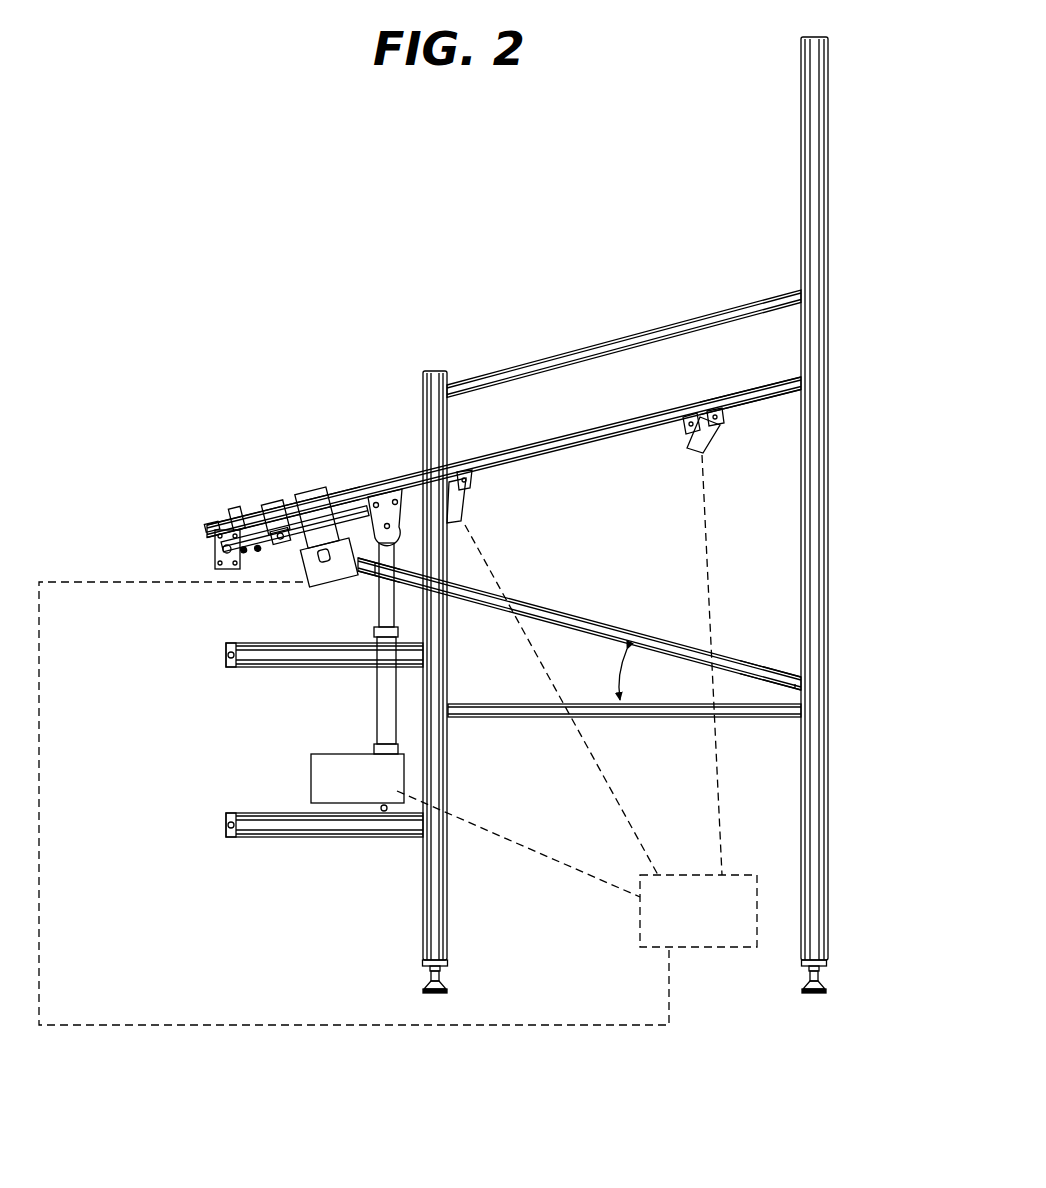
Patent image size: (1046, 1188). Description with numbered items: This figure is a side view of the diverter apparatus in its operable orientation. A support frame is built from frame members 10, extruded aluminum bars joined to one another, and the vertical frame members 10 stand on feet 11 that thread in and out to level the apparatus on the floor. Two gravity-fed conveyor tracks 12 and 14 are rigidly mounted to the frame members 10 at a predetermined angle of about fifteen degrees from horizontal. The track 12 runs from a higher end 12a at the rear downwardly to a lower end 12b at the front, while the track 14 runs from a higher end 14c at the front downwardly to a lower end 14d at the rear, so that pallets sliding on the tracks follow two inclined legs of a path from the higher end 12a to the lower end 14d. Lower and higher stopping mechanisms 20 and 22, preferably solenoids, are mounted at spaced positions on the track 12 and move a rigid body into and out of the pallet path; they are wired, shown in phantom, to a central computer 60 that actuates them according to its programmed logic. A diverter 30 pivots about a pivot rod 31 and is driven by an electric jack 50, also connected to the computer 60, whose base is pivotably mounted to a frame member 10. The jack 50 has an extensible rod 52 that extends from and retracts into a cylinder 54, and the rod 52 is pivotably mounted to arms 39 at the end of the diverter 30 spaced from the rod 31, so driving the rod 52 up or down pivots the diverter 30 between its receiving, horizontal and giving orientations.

The frame members 10 is at (262, 838).
The feet 11 is at (443, 987).
The conveyor track 12 is at (598, 437).
The higher end of track 12 12a is at (740, 390).
The lower end of track 12 12b is at (355, 490).
The conveyor track 14 is at (641, 643).
The higher end of track 14 14c is at (368, 574).
The lower end of track 14 14d is at (753, 667).
The lower stopping mechanism 20 is at (462, 505).
The higher stopping mechanism 22 is at (706, 443).
The diverter 30 is at (272, 509).
The pivot rod 31 is at (224, 549).
The arms 39 is at (391, 520).
The electric jack 50 is at (303, 769).
The extensible rod 52 is at (387, 617).
The cylinder 54 is at (383, 702).
The central computer 60 is at (716, 927).